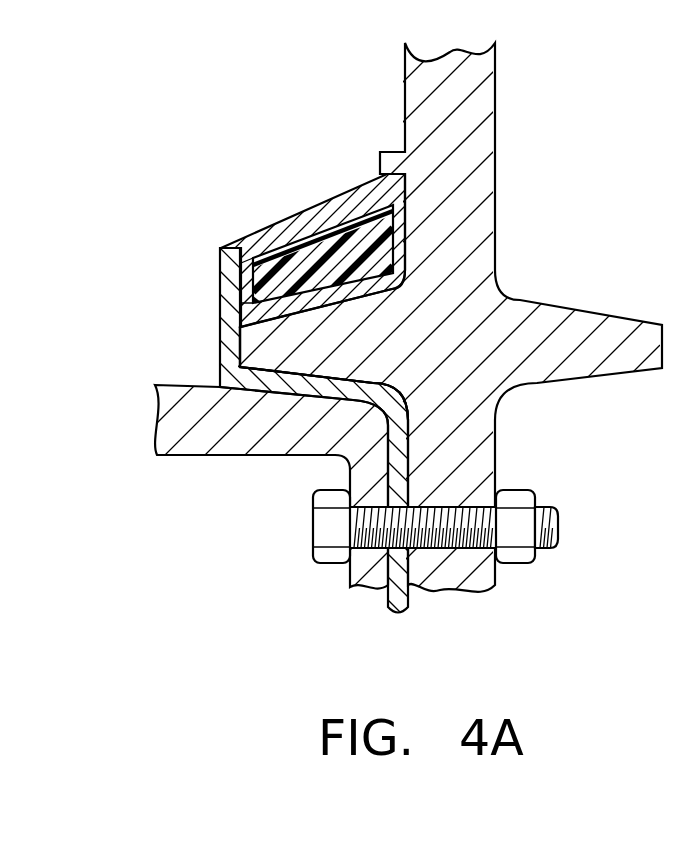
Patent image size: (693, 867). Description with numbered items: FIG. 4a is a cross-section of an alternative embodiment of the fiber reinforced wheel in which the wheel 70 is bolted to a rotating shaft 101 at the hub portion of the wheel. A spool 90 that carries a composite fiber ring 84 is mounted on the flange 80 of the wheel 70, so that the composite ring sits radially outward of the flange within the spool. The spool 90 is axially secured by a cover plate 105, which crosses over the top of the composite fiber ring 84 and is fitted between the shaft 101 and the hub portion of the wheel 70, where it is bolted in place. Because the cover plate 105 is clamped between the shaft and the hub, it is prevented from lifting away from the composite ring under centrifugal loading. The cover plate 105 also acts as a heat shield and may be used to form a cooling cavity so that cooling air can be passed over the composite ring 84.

The wheel 70 is at (477, 103).
The flange 80 is at (348, 355).
The composite fiber ring 84 is at (320, 248).
The spool 90 is at (238, 287).
The rotating shaft 101 is at (193, 393).
The cover plate 105 is at (232, 258).